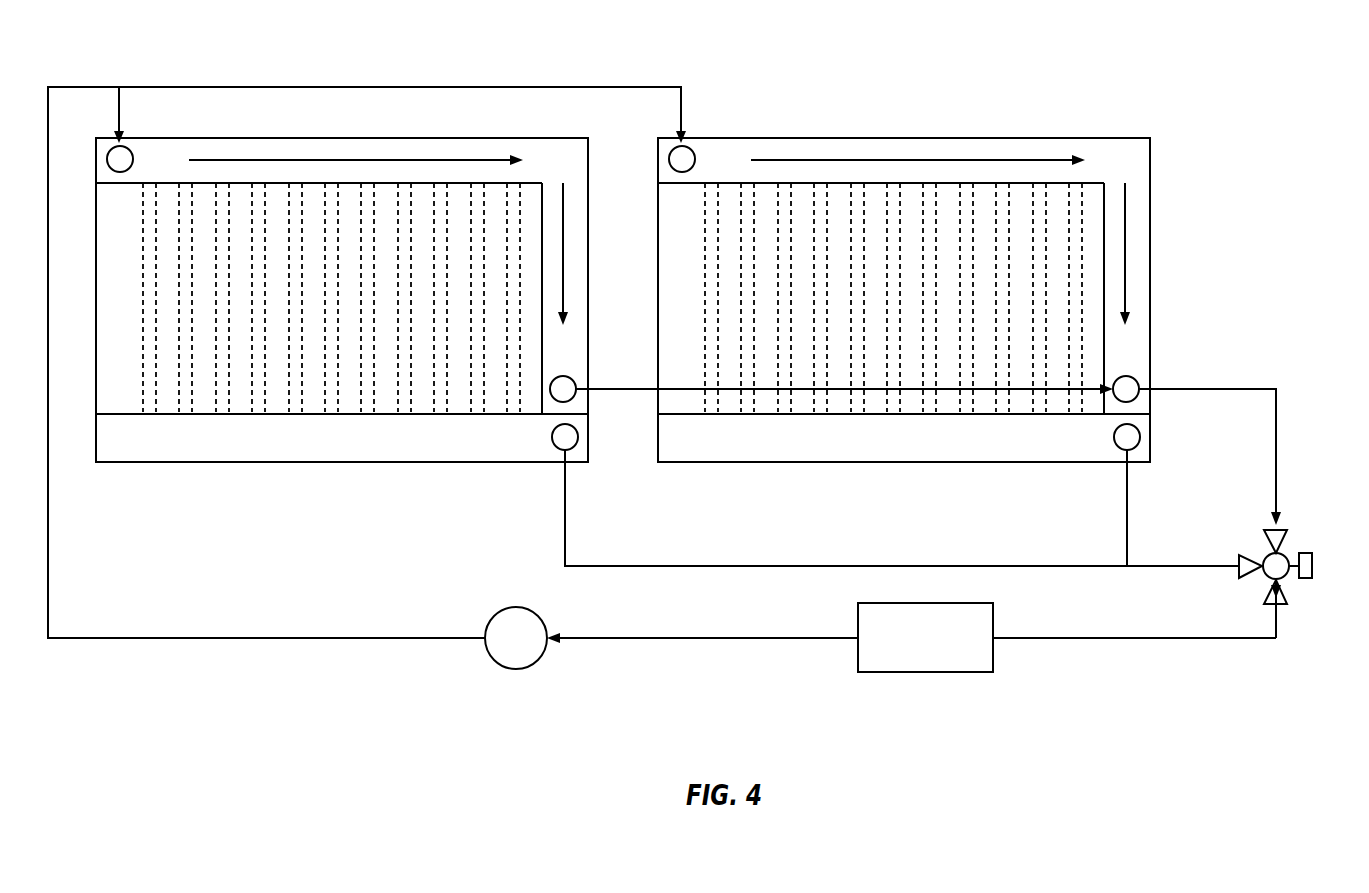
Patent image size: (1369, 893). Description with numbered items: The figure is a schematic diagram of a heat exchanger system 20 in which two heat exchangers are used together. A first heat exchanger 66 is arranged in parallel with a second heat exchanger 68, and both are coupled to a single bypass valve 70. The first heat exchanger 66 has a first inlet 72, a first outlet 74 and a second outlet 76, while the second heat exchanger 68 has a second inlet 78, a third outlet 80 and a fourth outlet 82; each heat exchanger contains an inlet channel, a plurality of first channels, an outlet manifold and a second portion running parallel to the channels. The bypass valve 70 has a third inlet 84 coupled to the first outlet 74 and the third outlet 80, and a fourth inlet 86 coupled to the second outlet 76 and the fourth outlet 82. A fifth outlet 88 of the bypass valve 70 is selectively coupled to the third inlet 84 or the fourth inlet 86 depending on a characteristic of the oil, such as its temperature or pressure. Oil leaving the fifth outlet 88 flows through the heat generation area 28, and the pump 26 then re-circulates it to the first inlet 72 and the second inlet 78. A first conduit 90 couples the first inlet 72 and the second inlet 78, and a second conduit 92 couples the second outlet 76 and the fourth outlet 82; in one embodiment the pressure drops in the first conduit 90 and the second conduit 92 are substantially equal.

The heat exchanger system 20 is at (136, 55).
The pump 26 is at (515, 669).
The heat generation area 28 is at (925, 672).
The first heat exchanger 66 is at (220, 462).
The second heat exchanger 68 is at (1090, 138).
The bypass valve 70 is at (1305, 553).
The first inlet 72 is at (110, 150).
The first outlet 74 is at (552, 437).
The second outlet 76 is at (563, 376).
The second inlet 78 is at (672, 149).
The third outlet 80 is at (1114, 437).
The fourth outlet 82 is at (1126, 376).
The third inlet 84 is at (1255, 556).
The fourth inlet 86 is at (1270, 525).
The fifth outlet 88 is at (1268, 590).
The first conduit 90 is at (267, 638).
The second conduit 92 is at (652, 395).